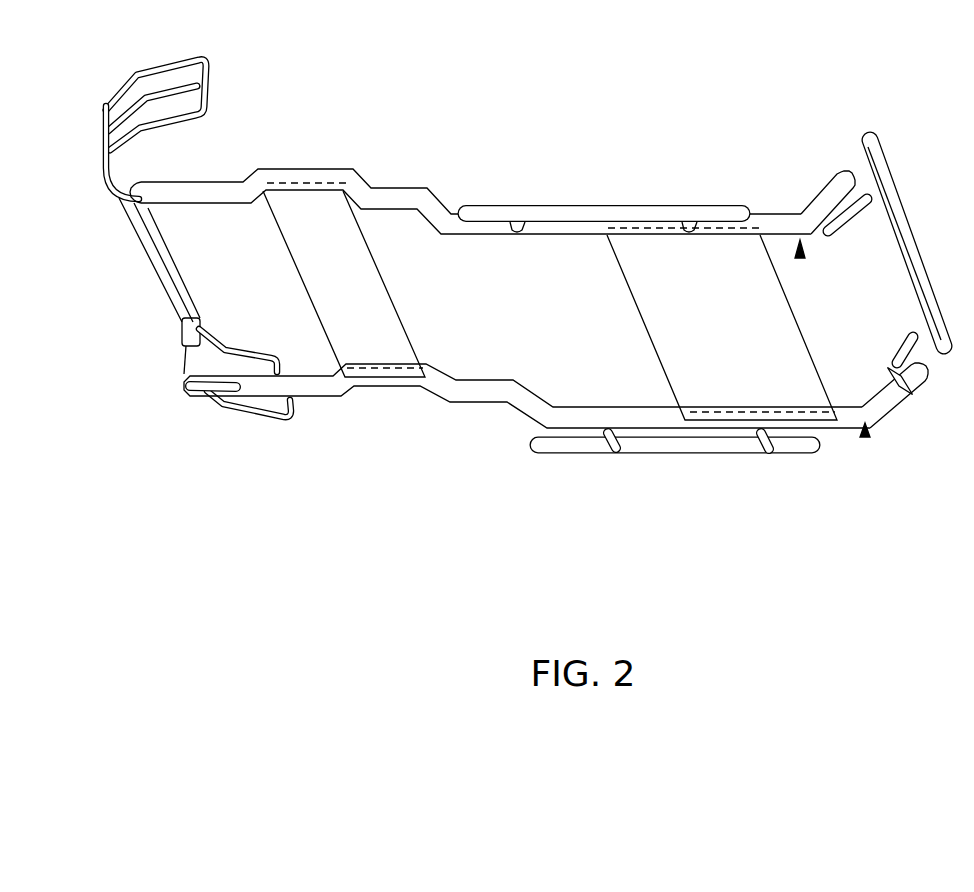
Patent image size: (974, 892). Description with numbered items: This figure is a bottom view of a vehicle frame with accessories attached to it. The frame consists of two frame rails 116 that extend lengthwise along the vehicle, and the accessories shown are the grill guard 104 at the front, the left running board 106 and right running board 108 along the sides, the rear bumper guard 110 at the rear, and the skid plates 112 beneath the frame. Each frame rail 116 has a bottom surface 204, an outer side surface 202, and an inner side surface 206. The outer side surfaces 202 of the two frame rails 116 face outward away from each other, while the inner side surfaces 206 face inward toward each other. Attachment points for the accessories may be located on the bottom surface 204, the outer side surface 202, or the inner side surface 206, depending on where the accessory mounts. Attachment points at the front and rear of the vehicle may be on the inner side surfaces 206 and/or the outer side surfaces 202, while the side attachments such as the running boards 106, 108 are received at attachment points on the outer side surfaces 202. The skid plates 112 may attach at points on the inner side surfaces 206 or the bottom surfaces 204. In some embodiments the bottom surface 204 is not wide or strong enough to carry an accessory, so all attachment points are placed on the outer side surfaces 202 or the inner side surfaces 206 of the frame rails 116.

The grill guard 104 is at (135, 252).
The left running board 106 is at (658, 205).
The right running board 108 is at (805, 457).
The rear bumper guard 110 is at (910, 215).
The skid plates 112 is at (372, 348).
The frame rails 116 is at (306, 187).
The outer side surface 202 is at (787, 217).
The bottom surface 204 is at (803, 258).
The inner side surface 206 is at (905, 373).